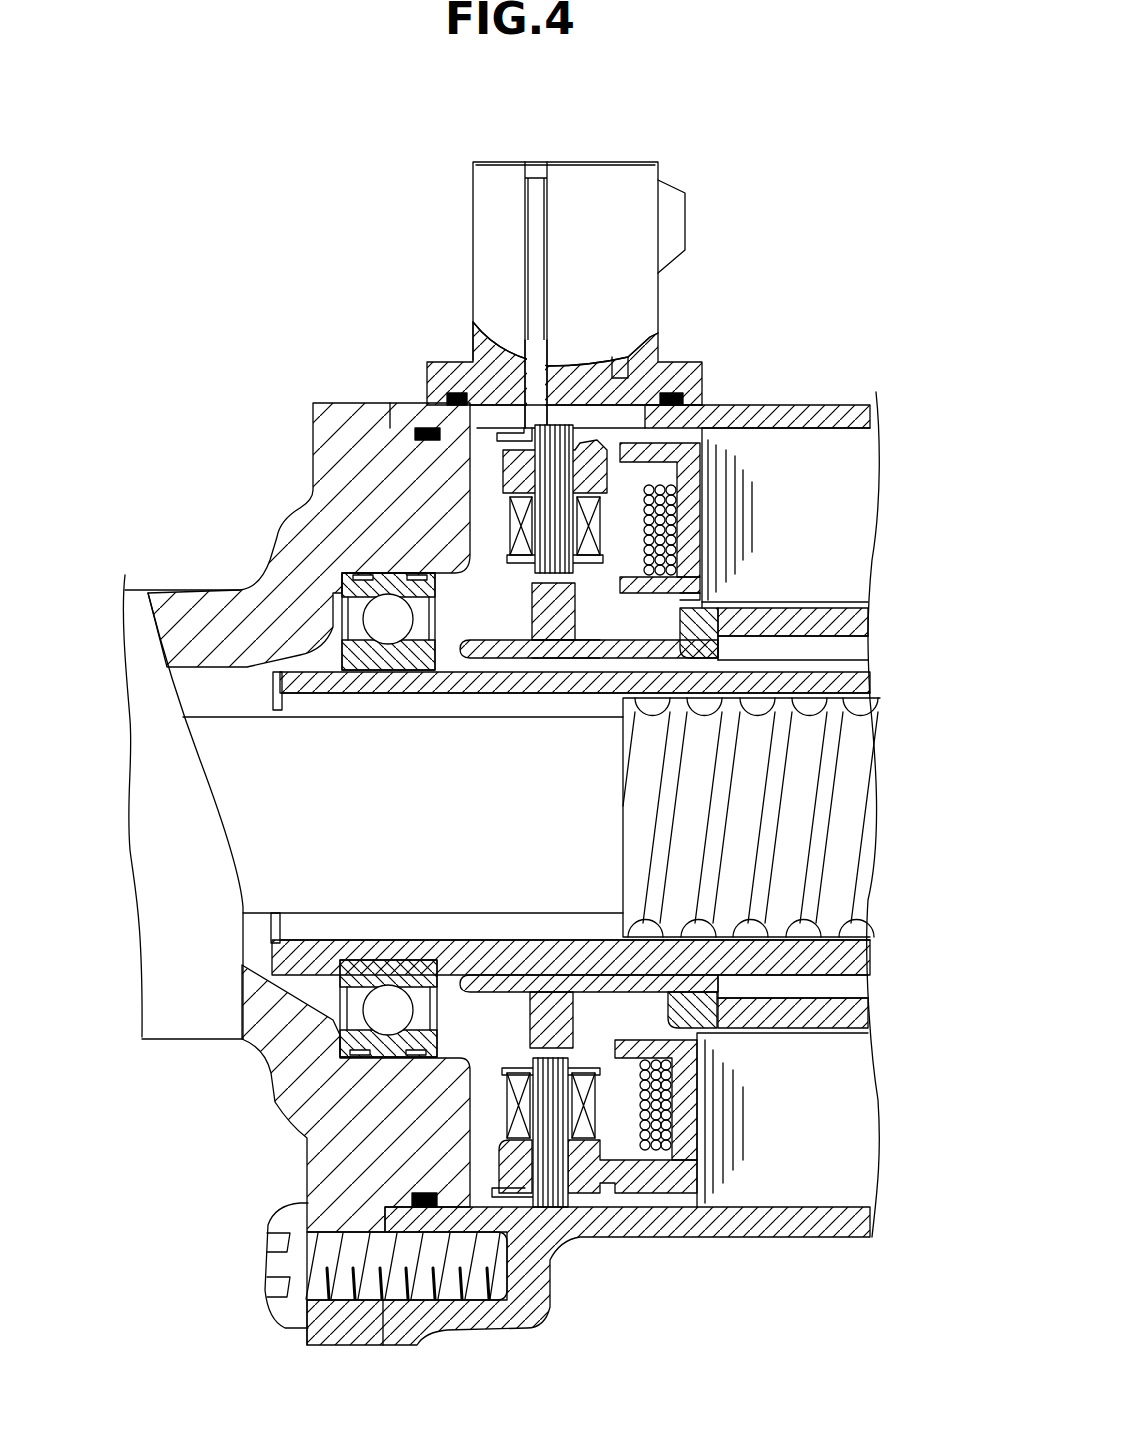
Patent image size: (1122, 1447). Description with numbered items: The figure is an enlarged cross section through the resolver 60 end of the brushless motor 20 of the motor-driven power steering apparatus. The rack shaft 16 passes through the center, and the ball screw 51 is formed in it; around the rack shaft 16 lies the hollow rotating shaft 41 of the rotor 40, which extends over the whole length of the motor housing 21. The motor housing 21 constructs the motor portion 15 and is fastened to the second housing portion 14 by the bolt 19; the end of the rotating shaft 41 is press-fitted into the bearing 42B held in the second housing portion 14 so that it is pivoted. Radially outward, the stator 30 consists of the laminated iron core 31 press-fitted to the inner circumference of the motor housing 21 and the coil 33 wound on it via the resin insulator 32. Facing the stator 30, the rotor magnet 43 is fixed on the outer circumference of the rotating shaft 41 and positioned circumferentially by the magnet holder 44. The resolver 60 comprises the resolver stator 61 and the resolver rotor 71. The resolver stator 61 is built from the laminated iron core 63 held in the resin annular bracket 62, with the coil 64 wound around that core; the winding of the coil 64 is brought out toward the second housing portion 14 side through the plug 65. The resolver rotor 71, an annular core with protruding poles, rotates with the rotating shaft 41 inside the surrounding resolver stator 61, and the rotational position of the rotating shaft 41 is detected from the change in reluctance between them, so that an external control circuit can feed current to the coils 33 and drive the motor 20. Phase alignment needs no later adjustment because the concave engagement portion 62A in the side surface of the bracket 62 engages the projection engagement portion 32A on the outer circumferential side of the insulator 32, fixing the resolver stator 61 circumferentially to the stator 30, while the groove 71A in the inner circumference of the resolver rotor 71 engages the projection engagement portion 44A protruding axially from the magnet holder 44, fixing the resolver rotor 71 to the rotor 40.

The second housing portion 14 is at (352, 412).
The motor portion 15 is at (817, 1238).
The rack shaft 16 is at (220, 753).
The bolt 19 is at (280, 1222).
The brushless motor 20 is at (850, 405).
The motor housing 21 is at (762, 1238).
The stator 30 is at (850, 465).
The laminated iron core 31 is at (862, 492).
The resin insulator 32 is at (680, 462).
The projection engagement portion 32A is at (625, 460).
The coil 33 is at (662, 528).
The rotor 40 is at (872, 618).
The hollow rotating shaft 41 is at (870, 680).
The bearing 42B is at (377, 617).
The rotor magnet 43 is at (862, 622).
The magnet holder 44 is at (690, 620).
The projection engagement portion 44A is at (565, 665).
The ball screw 51 is at (853, 787).
The resolver 60 is at (484, 567).
The resolver stator 61 is at (488, 512).
The bracket 62 is at (447, 405).
The concave engagement portion 62A is at (614, 450).
The laminated iron core 63 is at (683, 573).
The coil 64 is at (713, 490).
The plug 65 is at (625, 230).
The resolver rotor 71 is at (513, 610).
The groove 71A is at (527, 660).